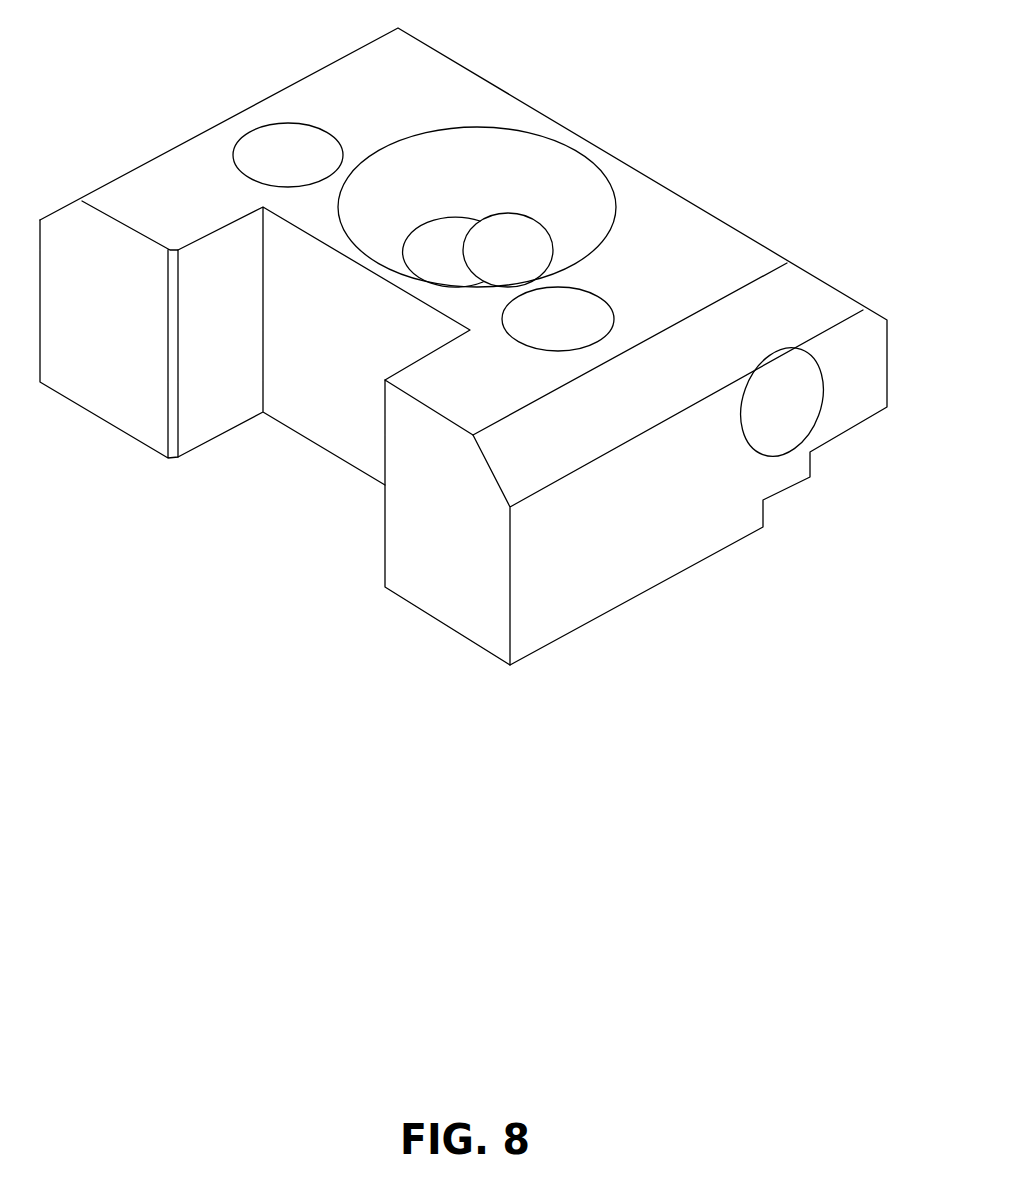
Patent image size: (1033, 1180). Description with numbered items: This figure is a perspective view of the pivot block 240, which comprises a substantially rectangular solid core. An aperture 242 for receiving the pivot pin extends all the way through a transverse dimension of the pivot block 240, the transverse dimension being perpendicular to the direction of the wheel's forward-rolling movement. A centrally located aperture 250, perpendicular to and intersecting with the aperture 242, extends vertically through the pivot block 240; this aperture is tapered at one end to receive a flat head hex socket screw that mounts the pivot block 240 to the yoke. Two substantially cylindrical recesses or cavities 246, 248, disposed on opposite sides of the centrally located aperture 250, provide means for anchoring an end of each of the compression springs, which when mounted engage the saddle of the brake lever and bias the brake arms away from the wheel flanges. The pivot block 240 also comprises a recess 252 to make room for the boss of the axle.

The pivot block 240 is at (745, 135).
The aperture 242 is at (793, 443).
The cylindrical recess 246 is at (612, 306).
The cylindrical recess 248 is at (328, 131).
The centrally located aperture 250 is at (555, 187).
The recess 252 is at (348, 442).